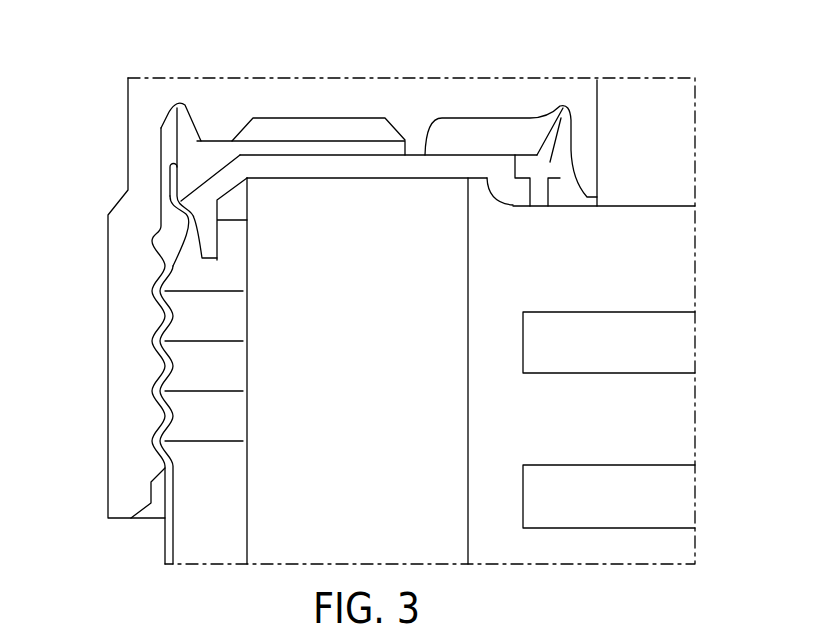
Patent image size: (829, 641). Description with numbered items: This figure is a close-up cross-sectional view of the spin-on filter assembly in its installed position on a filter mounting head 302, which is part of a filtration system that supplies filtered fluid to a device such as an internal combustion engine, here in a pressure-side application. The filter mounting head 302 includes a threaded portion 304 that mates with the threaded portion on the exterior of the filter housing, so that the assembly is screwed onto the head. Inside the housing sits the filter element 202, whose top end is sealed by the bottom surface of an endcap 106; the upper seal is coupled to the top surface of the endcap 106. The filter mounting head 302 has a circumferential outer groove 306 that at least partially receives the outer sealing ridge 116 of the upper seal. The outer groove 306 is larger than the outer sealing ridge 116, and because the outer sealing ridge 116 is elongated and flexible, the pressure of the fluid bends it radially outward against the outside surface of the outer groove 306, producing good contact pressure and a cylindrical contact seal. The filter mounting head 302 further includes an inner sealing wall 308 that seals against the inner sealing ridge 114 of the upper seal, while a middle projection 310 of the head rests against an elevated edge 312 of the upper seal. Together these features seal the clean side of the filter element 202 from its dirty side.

The filter mounting head 302 is at (372, 66).
The threaded portion 304 is at (125, 402).
The circumferential outer groove 306 is at (184, 103).
The outer sealing ridge 116 is at (177, 128).
The middle projection 310 is at (432, 125).
The inner sealing ridge 114 is at (566, 107).
The inner sealing wall 308 is at (582, 153).
The elevated edge 312 is at (397, 148).
The endcap 106 is at (497, 180).
The filter element 202 is at (377, 376).